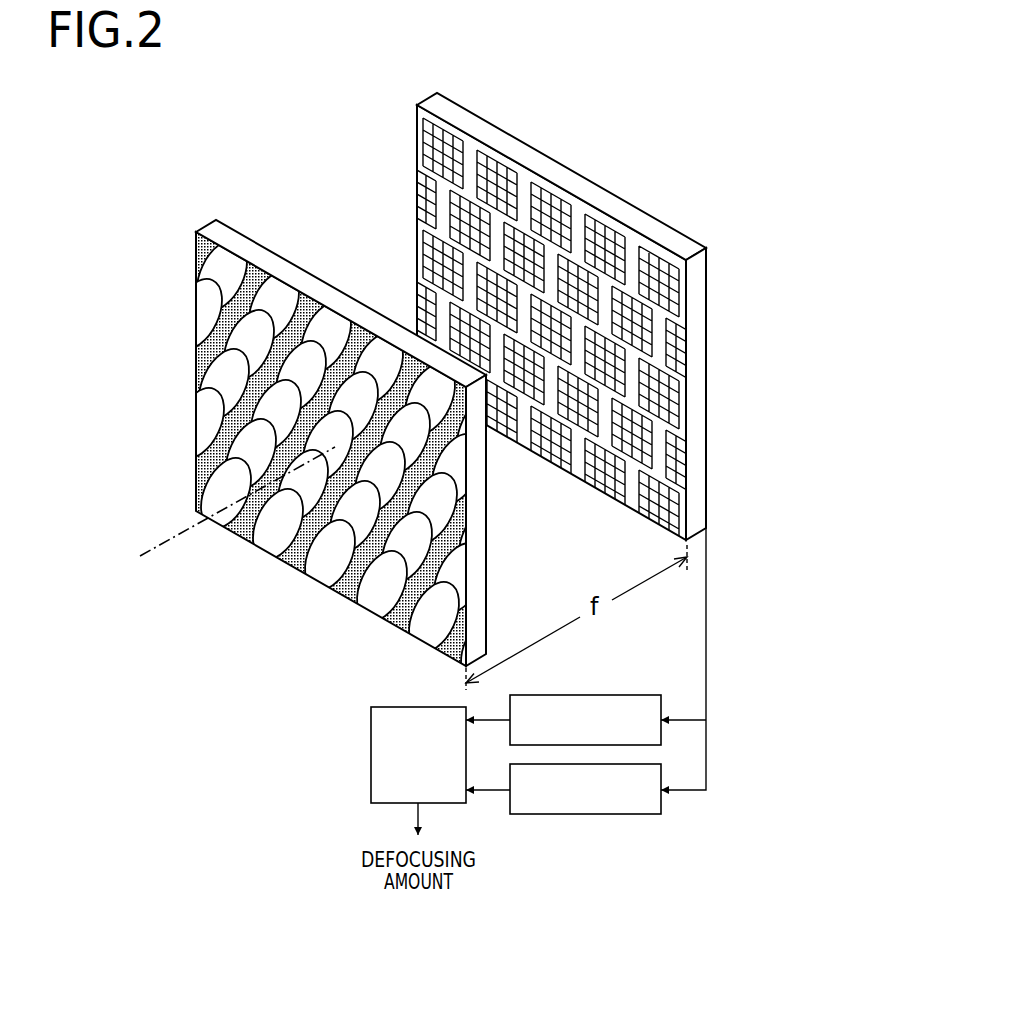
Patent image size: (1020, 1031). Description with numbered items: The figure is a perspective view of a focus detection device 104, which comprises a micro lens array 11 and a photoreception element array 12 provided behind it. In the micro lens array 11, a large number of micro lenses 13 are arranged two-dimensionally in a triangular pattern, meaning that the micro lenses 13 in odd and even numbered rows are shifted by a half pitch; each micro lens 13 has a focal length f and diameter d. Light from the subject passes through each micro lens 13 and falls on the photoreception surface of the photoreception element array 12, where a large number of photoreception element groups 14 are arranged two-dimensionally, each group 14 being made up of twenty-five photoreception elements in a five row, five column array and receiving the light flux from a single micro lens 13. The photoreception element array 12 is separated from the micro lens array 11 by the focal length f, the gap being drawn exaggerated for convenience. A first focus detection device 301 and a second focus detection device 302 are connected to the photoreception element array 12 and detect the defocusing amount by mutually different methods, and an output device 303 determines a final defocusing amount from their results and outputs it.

The focus detection device 104 is at (272, 157).
The micro lens array 11 is at (355, 455).
The photoreception element array 12 is at (551, 334).
The micro lens 13 is at (277, 540).
The photoreception element group 14 is at (498, 425).
The first focus detection device 301 is at (617, 693).
The second focus detection device 302 is at (598, 817).
The output device 303 is at (370, 762).